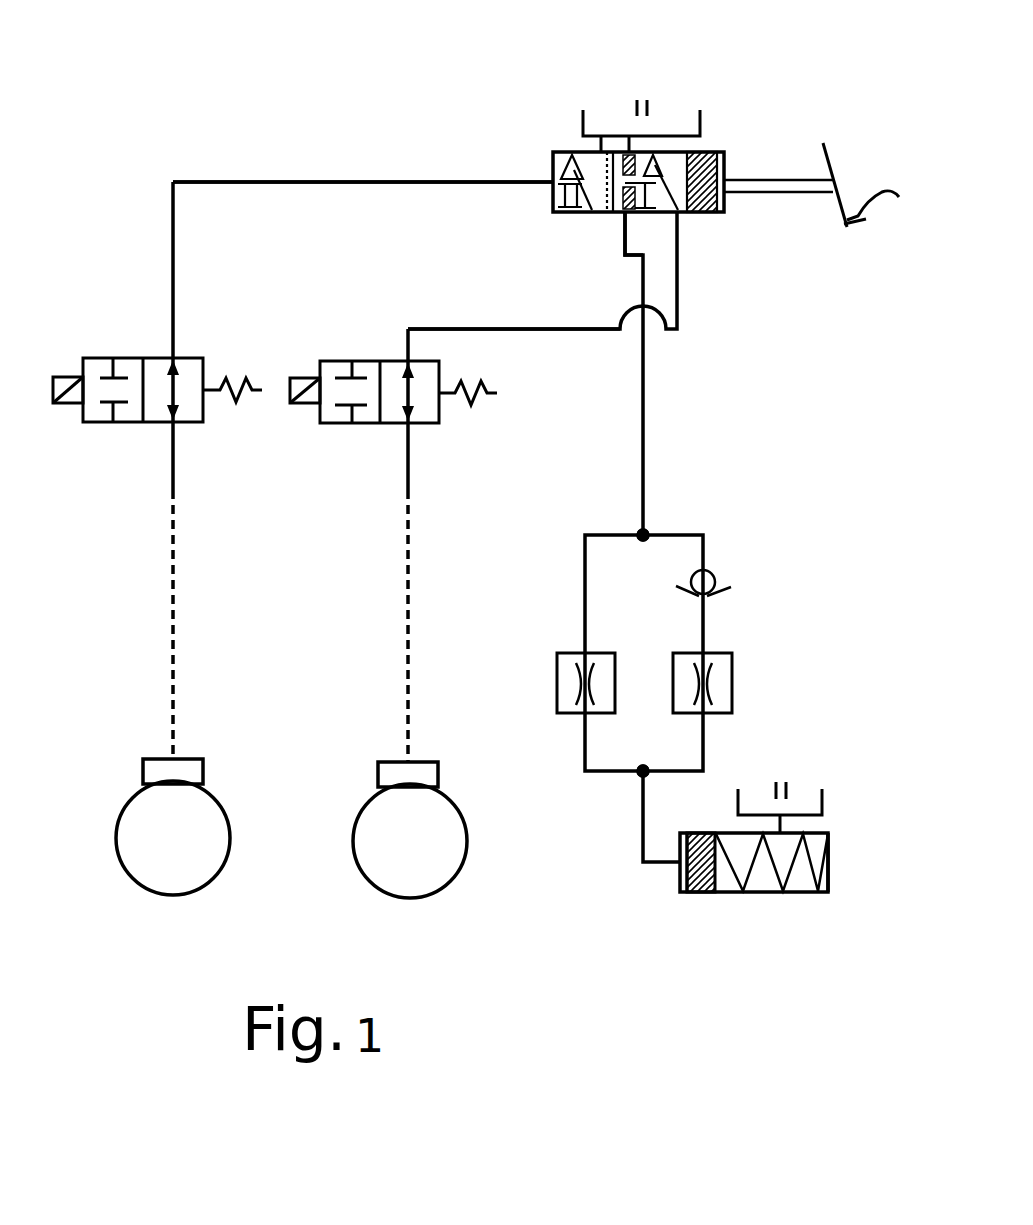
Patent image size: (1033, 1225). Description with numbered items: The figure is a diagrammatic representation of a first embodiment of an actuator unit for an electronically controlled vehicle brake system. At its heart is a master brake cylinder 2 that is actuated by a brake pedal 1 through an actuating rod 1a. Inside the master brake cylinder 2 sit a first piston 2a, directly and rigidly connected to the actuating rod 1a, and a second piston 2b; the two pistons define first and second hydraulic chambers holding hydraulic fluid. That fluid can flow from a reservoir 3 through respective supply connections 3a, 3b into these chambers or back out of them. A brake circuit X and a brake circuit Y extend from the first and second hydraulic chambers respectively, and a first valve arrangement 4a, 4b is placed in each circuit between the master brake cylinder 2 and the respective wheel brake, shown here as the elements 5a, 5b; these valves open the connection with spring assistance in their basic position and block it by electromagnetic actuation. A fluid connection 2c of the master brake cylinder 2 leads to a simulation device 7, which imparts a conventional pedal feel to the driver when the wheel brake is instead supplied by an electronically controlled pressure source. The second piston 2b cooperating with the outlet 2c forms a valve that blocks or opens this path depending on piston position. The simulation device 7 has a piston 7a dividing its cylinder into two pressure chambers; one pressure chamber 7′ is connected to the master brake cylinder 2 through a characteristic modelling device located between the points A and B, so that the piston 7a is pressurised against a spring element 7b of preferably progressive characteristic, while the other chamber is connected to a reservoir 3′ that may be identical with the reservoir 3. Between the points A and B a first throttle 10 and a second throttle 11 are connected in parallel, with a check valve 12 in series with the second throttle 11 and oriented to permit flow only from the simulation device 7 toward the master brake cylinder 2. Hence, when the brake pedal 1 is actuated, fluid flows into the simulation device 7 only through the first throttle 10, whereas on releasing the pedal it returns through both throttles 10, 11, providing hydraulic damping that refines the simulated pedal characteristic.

The brake pedal 1 is at (868, 185).
The actuating rod 1a is at (778, 183).
The master brake cylinder 2 is at (724, 132).
The first piston 2a is at (712, 213).
The second piston 2b is at (614, 213).
The fluid connection 2c is at (636, 233).
The reservoir 3 is at (663, 107).
The supply connection 3a is at (642, 137).
The supply connection 3b is at (595, 147).
The reservoir 3′ is at (797, 790).
The first valve arrangement 4a is at (328, 352).
The first valve arrangement 4b is at (197, 352).
The pressure accumulator 5a is at (457, 838).
The pressure accumulator 5b is at (222, 835).
The simulation device 7 is at (683, 893).
The pressure chamber 7′ is at (680, 880).
The piston 7a is at (703, 893).
The spring element 7b is at (763, 870).
The first throttle 10 is at (555, 663).
The second throttle 11 is at (733, 662).
The check valve 12 is at (713, 577).
The point A is at (647, 512).
The point B is at (641, 807).
The brake circuit X is at (514, 310).
The brake circuit Y is at (363, 162).